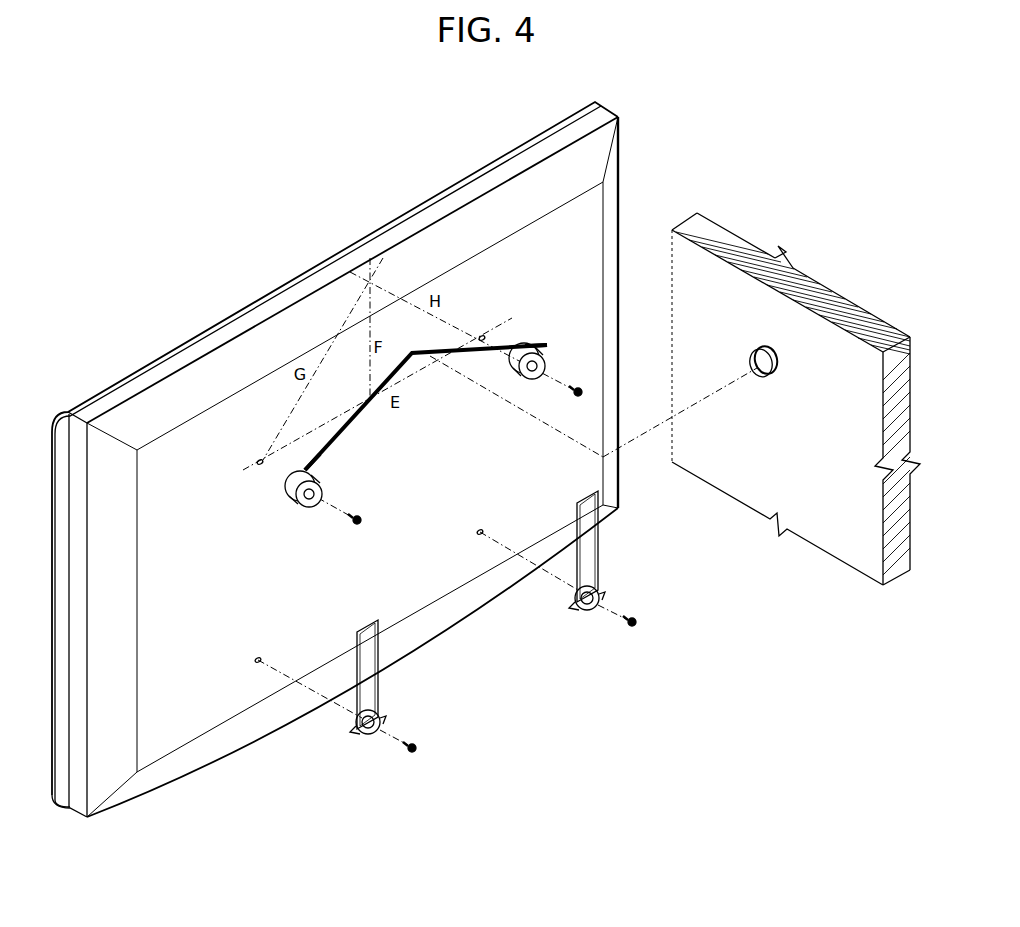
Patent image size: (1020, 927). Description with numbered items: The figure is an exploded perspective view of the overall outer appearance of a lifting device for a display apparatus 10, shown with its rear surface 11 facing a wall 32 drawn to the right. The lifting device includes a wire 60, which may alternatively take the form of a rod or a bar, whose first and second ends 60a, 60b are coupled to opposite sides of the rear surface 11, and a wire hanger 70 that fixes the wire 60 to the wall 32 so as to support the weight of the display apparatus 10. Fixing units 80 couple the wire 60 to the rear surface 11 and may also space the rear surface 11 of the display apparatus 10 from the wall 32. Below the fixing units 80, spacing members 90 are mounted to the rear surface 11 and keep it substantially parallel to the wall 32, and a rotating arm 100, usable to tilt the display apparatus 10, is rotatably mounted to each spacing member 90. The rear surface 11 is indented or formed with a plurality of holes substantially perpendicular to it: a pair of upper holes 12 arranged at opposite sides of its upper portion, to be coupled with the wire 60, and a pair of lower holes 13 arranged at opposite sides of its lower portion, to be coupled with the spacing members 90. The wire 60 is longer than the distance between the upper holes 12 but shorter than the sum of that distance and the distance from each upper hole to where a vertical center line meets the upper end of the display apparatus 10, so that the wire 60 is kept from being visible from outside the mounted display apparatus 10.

The display apparatus 10 is at (266, 256).
The rear surface 11 is at (201, 714).
The upper holes 12 is at (483, 334).
The lower holes 13 is at (259, 657).
The wall 32 is at (847, 540).
The wire 60 is at (345, 432).
The first end of the wire 60a is at (287, 467).
The second end of the wire 60b is at (519, 327).
The wire hanger 70 is at (749, 324).
The fixing units 80 is at (556, 346).
The spacing members 90 is at (382, 718).
The rotating arm 100 is at (378, 660).